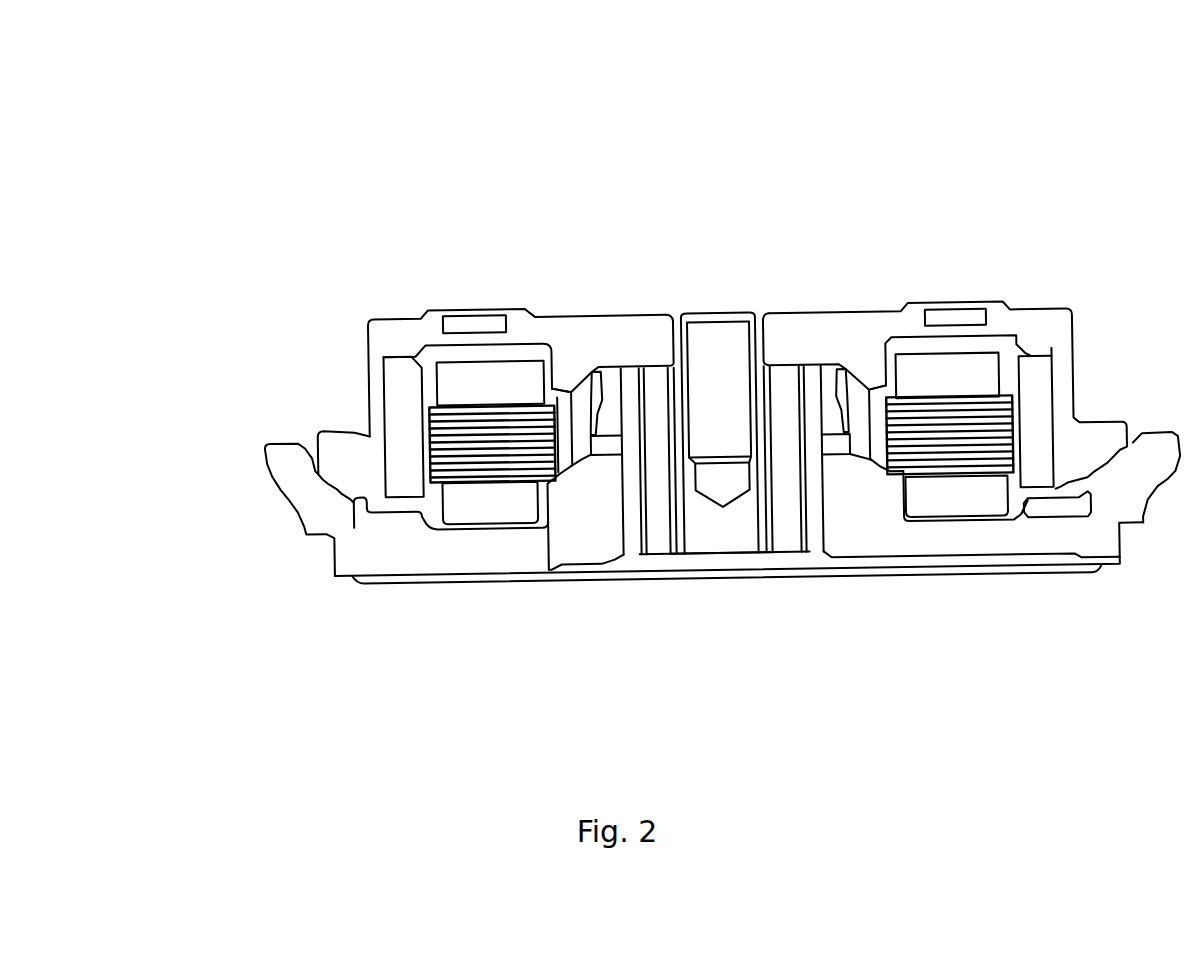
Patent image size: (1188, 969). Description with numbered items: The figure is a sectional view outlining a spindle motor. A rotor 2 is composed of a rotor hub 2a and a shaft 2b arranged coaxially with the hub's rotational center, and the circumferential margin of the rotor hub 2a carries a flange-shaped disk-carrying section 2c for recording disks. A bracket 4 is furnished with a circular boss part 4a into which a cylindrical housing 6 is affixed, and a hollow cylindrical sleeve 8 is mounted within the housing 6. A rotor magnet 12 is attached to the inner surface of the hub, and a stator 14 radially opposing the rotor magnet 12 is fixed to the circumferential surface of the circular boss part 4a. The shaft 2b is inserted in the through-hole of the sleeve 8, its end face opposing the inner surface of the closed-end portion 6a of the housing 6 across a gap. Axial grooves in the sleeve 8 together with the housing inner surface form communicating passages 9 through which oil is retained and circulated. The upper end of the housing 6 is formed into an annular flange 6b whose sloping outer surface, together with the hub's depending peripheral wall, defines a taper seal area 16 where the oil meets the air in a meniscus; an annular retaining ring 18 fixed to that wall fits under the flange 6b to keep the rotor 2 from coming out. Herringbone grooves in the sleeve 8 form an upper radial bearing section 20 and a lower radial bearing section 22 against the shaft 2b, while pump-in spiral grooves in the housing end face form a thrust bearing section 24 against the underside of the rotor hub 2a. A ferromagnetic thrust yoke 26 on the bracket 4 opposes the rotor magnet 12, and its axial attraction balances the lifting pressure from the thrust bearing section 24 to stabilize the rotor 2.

The rotor 2 is at (1048, 308).
The rotor hub 2a is at (826, 424).
The shaft 2b is at (706, 367).
The disk-carrying section 2c is at (315, 425).
The bracket 4 is at (1069, 547).
The circular boss part 4a is at (862, 485).
The housing 6 is at (796, 557).
The closed-end portion 6a is at (750, 555).
The annular flange 6b is at (613, 393).
The sleeve 8 is at (788, 453).
The communicating passages 9 is at (646, 492).
The rotor magnet 12 is at (405, 432).
The stator 14 is at (468, 499).
The taper seal area 16 is at (577, 454).
The retaining ring 18 is at (843, 434).
The upper radial bearing section 20 is at (771, 406).
The lower radial bearing section 22 is at (670, 489).
The thrust bearing section 24 is at (806, 366).
The thrust yoke 26 is at (358, 516).